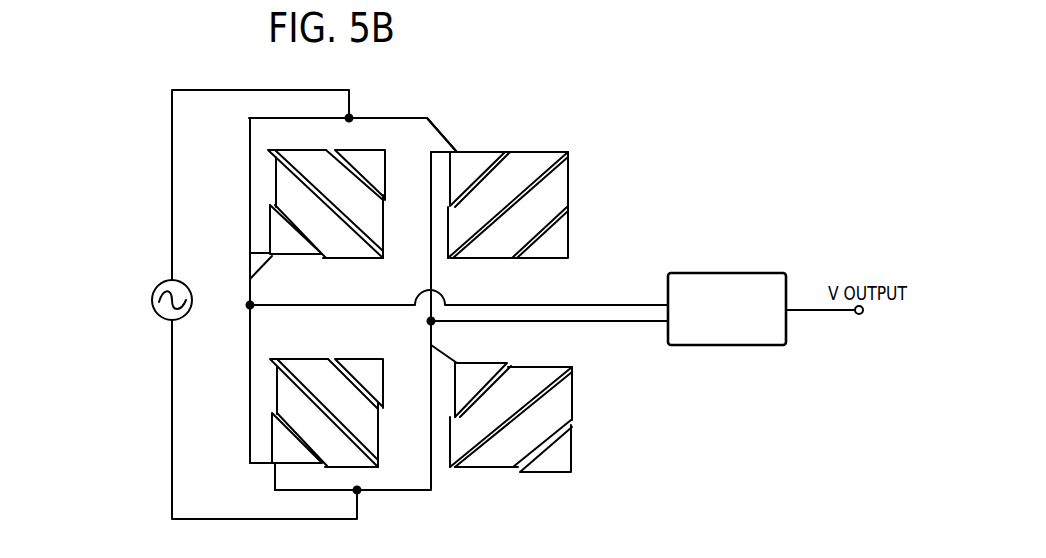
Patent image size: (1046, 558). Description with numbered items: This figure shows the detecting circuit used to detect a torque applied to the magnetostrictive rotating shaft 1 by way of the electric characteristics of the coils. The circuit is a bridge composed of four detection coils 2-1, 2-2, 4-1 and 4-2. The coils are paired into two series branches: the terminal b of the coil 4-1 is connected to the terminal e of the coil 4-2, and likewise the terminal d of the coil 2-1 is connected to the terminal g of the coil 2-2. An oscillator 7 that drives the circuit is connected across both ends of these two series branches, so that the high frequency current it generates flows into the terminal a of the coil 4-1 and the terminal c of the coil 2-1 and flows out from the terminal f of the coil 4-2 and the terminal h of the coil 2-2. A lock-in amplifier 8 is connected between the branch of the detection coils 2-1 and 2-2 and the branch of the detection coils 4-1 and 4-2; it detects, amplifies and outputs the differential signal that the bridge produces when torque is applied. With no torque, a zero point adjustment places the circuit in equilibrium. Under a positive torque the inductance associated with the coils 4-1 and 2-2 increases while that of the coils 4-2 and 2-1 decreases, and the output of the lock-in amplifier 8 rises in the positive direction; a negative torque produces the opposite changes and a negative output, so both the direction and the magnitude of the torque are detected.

The magnetostrictive rotating shaft 1 is at (352, 116).
The oscillator 7 is at (157, 314).
The lock-in amplifier 8 is at (718, 280).
The detection coil 4-1 is at (333, 190).
The detection coil 4-2 is at (334, 397).
The detection coil 2-1 is at (528, 190).
The detection coil 2-2 is at (528, 402).
The terminal a is at (260, 245).
The terminal b is at (269, 269).
The terminal c is at (445, 134).
The terminal d is at (440, 164).
The terminal e is at (260, 451).
The terminal f is at (281, 476).
The terminal g is at (450, 347).
The terminal h is at (447, 390).